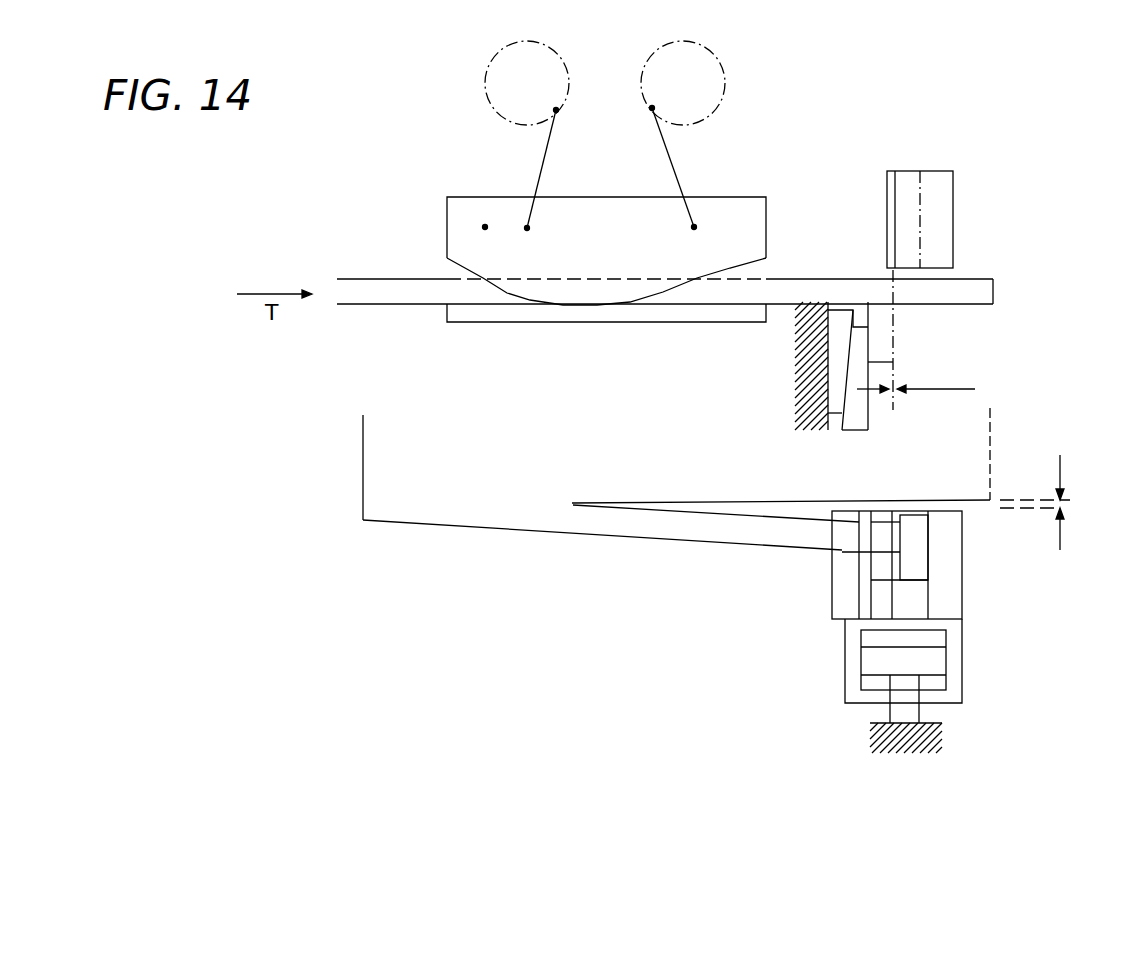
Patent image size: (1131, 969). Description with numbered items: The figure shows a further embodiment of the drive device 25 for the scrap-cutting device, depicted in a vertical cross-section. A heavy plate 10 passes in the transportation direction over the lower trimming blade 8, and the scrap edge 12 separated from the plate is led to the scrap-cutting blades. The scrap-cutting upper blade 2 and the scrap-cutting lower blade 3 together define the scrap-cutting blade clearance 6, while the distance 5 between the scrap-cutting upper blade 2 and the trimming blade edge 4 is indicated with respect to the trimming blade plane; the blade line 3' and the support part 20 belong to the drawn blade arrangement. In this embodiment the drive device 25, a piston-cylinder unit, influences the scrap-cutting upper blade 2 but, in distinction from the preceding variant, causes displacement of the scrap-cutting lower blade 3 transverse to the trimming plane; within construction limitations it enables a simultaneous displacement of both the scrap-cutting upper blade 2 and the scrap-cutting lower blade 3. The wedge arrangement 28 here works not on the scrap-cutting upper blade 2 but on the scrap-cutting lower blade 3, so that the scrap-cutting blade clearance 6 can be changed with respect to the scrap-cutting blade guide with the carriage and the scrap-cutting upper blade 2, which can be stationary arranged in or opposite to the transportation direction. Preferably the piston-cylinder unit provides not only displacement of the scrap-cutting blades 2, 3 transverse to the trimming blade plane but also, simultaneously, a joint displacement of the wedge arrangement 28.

The scrap-cutting upper blade 2 is at (908, 217).
The scrap-cutting lower blade 3 is at (863, 460).
The blade cutting edge line 3' is at (889, 368).
The trimming blade edge 4 is at (1007, 500).
The distance between the scrap-cutting upper blade and the trimming blade edge 5 is at (1067, 507).
The scrap-cutting blade clearance 6 is at (485, 227).
The lower trimming blade 8 is at (535, 323).
The heavy plate 10 is at (363, 288).
The scrap edge 12 is at (738, 536).
The blade support 20 is at (936, 183).
The drive device 25 is at (797, 383).
The wedge arrangement 28 is at (867, 515).